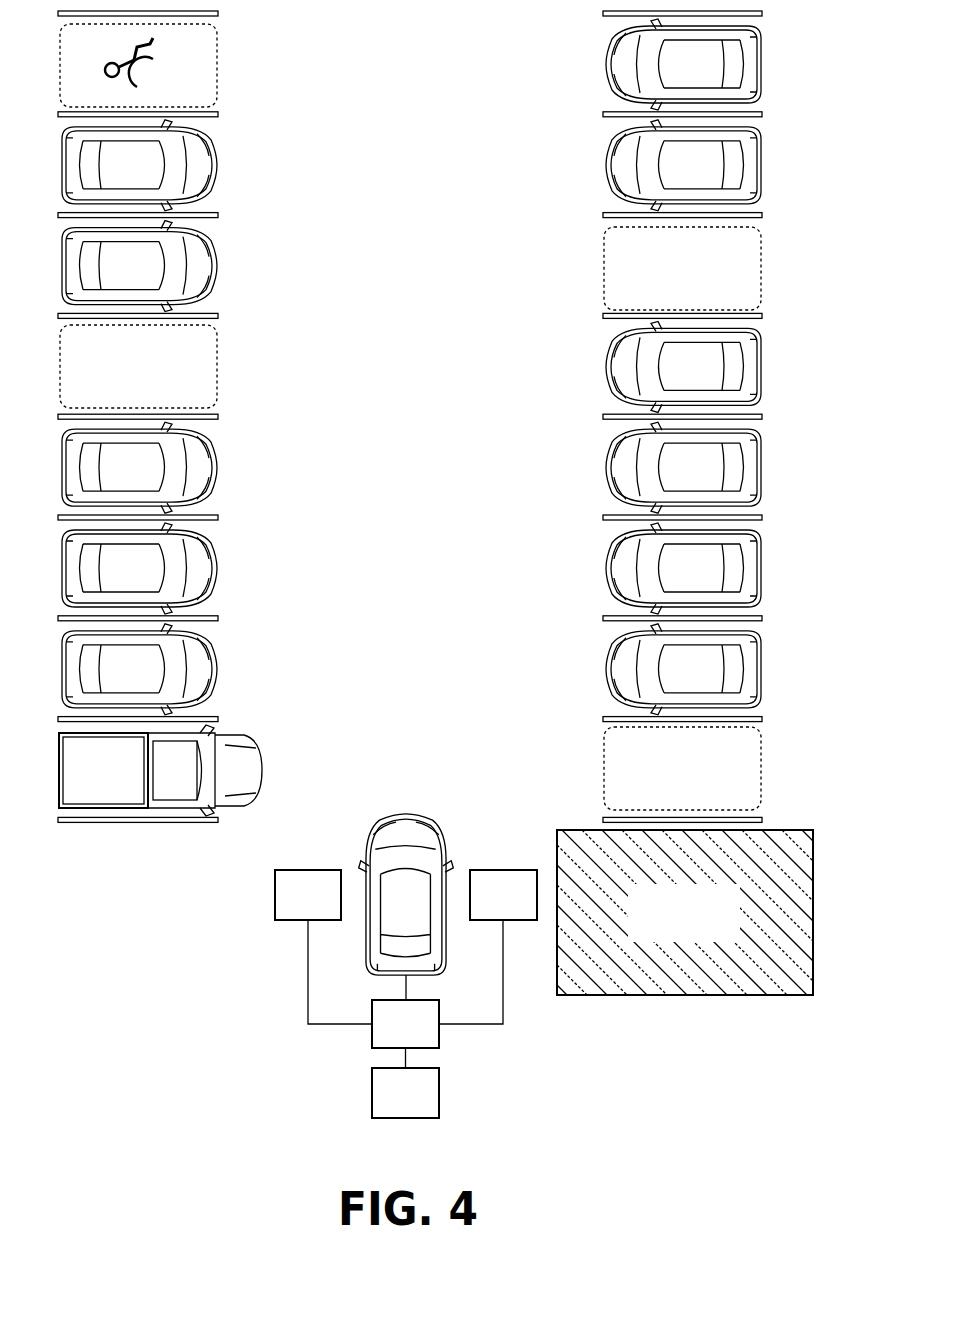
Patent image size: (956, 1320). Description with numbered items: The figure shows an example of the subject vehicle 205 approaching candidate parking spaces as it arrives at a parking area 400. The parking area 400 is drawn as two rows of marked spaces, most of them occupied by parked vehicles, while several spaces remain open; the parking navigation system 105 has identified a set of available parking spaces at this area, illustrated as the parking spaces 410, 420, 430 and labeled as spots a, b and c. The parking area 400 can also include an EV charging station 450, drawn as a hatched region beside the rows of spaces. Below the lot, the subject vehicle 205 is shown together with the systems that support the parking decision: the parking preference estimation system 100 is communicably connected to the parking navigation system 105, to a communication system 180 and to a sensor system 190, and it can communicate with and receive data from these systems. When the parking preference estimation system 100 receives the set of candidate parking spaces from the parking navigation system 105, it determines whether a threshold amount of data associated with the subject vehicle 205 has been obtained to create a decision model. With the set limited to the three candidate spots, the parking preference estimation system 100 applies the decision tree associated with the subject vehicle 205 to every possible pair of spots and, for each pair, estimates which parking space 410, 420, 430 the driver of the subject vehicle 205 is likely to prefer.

The parking preference estimation system 100 is at (386, 1035).
The parking navigation system 105 is at (386, 1104).
The communication system 180 is at (484, 904).
The sensor system 190 is at (289, 904).
The subject vehicle 205 is at (387, 918).
The parking area 400 is at (452, 463).
The parking space 410 is at (602, 757).
The parking space 420 is at (217, 357).
The parking space 430 is at (602, 250).
The EV charging station 450 is at (664, 924).